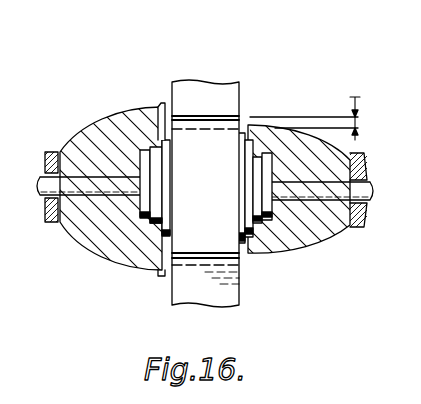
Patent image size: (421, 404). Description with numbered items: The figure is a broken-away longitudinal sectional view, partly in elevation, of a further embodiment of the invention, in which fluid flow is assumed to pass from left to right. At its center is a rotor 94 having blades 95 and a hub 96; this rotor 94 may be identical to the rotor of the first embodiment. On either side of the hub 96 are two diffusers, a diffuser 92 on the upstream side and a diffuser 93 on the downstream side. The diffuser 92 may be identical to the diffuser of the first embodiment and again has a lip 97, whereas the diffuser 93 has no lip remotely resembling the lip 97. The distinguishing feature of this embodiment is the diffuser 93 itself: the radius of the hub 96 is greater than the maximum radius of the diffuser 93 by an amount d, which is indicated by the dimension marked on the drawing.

The diffuser 92 is at (90, 128).
The diffuser 93 is at (360, 148).
The rotor 94 is at (254, 77).
The blades 95 is at (230, 194).
The hub 96 is at (188, 199).
The lip 97 is at (158, 108).
The amount d is at (312, 112).